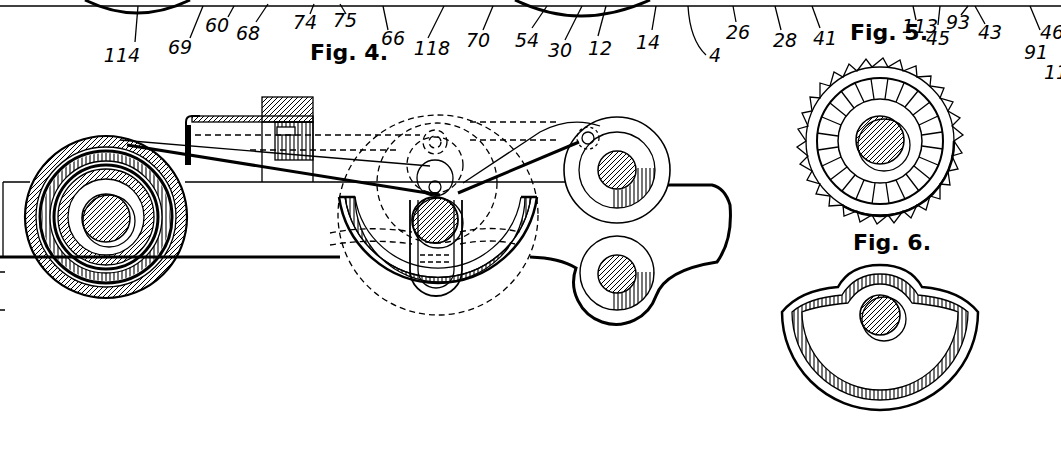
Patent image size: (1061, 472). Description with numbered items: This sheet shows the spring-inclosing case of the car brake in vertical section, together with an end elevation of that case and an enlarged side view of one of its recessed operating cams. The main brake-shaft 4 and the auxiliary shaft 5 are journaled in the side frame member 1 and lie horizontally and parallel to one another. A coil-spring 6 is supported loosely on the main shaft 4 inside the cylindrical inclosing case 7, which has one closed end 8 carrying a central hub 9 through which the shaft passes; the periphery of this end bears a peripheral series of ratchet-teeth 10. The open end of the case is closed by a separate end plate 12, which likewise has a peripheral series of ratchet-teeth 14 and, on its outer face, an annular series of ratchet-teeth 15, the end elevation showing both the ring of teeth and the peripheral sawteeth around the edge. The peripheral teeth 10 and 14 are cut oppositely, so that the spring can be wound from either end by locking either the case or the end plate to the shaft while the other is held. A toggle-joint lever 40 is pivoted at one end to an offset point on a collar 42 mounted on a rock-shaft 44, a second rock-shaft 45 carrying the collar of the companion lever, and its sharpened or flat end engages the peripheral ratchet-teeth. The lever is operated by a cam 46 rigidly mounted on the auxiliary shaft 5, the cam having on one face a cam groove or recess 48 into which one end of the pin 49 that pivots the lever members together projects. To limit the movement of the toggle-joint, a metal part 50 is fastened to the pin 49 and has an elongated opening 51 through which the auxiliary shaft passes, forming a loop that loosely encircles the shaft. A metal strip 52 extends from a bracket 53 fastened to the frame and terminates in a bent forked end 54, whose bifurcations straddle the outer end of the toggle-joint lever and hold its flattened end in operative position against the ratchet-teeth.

In FIG. 4, the side frame member 1 is at (275, 225).
In FIG. 4, the main brake-shaft 4 is at (103, 225).
In FIG. 5, the main brake-shaft 4 is at (890, 148).
In FIG. 4, the auxiliary shaft 5 is at (420, 228).
In FIG. 6, the auxiliary shaft 5 is at (895, 318).
In FIG. 4, the coil-spring 6 is at (80, 172).
In FIG. 4, the inclosing case 7 is at (165, 258).
In FIG. 5, the inclosing case 7 is at (812, 105).
In FIG. 4, the closed end 8 is at (180, 243).
In FIG. 4, the central hub 9 is at (90, 245).
In FIG. 4, the peripheral series of ratchet-teeth 10 is at (46, 172).
In FIG. 5, the end plate 12 is at (944, 138).
In FIG. 5, the peripheral series of ratchet-teeth 14 is at (925, 83).
In FIG. 5, the annular series of ratchet-teeth 15 is at (920, 185).
In FIG. 4, the toggle-joint lever 40 is at (303, 167).
In FIG. 4, the collar 42 is at (622, 122).
In FIG. 4, the rock-shaft 44 is at (637, 158).
In FIG. 4, the rock-shaft 45 is at (628, 285).
In FIG. 4, the cam 46 is at (370, 285).
In FIG. 6, the cam 46 is at (968, 340).
In FIG. 4, the cam groove or recess 48 is at (515, 268).
In FIG. 6, the cam groove or recess 48 is at (955, 305).
In FIG. 4, the pin 49 is at (438, 185).
In FIG. 4, the metal part 50 is at (458, 293).
In FIG. 4, the elongated opening 51 is at (450, 275).
In FIG. 4, the metal strip 52 is at (228, 118).
In FIG. 4, the bracket 53 is at (287, 97).
In FIG. 4, the bent forked end 54 is at (186, 126).